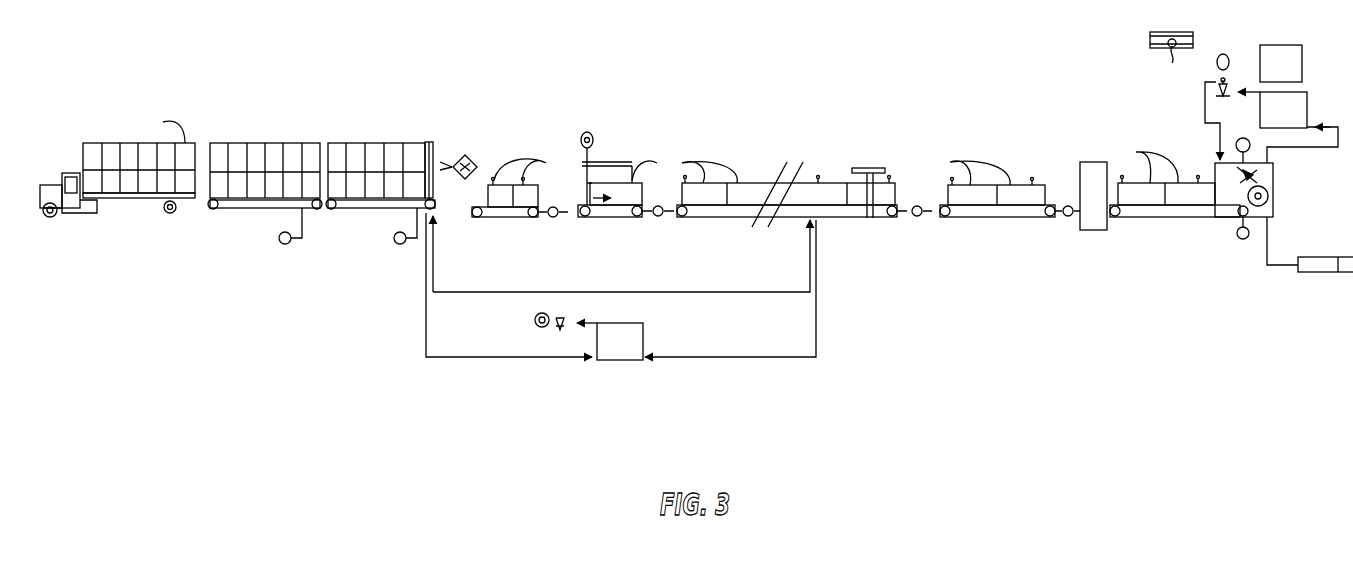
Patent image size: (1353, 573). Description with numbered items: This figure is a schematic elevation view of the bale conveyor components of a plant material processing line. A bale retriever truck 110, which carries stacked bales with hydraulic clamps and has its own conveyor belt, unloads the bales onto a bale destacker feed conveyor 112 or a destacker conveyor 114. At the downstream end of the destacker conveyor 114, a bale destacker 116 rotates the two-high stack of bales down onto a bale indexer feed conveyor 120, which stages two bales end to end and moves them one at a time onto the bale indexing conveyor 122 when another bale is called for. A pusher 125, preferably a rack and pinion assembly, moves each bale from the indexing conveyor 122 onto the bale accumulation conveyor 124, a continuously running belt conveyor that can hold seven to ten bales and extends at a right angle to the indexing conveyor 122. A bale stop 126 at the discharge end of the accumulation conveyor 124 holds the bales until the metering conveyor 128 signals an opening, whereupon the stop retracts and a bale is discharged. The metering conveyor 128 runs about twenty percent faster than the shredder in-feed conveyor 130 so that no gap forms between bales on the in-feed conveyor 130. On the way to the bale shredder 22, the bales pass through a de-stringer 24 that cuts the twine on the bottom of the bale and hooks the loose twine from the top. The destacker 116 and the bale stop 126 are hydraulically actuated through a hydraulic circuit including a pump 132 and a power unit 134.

The bale retriever truck 110 is at (74, 180).
The bale destacker feed conveyor 112 is at (238, 208).
The destacker conveyor 114 is at (358, 210).
The bale destacker 116 is at (452, 150).
The bale indexer feed conveyor 120 is at (493, 215).
The bale indexing conveyor 122 is at (635, 218).
The bale accumulation conveyor 124 is at (798, 215).
The bale pusher 125 is at (630, 162).
The bale stop 126 is at (871, 168).
The metering conveyor 128 is at (978, 218).
The shredder in-feed conveyor 130 is at (1175, 218).
The de-stringer 24 is at (1093, 165).
The bale shredder 22 is at (1275, 183).
The pump 132 is at (560, 332).
The power unit 134 is at (620, 357).